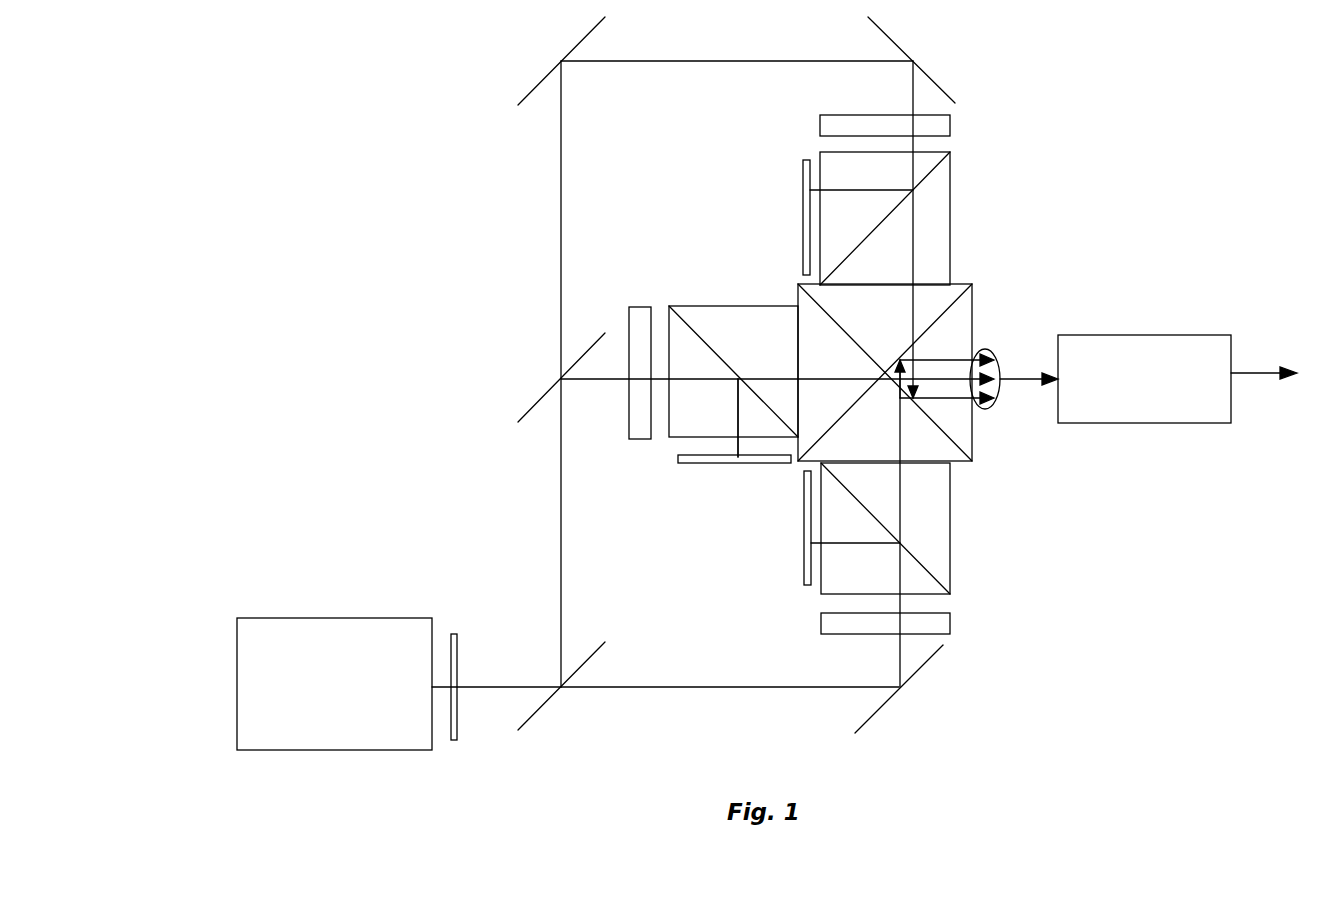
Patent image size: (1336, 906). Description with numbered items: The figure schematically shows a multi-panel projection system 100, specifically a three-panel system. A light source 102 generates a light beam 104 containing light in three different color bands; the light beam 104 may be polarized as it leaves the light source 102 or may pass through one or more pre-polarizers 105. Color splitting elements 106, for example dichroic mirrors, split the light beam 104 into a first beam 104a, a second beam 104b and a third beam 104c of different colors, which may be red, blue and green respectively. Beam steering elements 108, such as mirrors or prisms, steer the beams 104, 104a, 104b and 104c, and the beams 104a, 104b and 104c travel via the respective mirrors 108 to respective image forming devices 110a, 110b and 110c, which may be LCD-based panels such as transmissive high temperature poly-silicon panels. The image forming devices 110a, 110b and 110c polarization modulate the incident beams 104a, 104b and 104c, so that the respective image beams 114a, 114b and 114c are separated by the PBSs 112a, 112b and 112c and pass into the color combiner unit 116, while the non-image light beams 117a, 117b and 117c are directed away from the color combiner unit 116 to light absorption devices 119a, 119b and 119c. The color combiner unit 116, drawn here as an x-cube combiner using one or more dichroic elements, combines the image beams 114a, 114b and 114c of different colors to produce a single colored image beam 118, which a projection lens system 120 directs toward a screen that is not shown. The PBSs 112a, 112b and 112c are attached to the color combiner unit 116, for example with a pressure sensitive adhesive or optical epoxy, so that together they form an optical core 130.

The multi-panel projection system 100 is at (380, 198).
The light source 102 is at (350, 752).
The light beam 104 is at (527, 687).
The first beam 104a is at (741, 61).
The second beam 104b is at (680, 687).
The third beam 104c is at (600, 385).
The pre-polarizer 105 is at (458, 640).
The color splitting element 106 is at (535, 715).
The beam steering element 108 is at (520, 100).
The image forming device 110a is at (870, 114).
The image forming device 110b is at (943, 637).
The image forming device 110c is at (627, 315).
The PBS 112a is at (950, 193).
The PBS 112b is at (950, 558).
The PBS 112c is at (703, 305).
The image beam 114a is at (913, 248).
The image beam 114b is at (900, 500).
The image beam 114c is at (778, 378).
The color combiner unit 116 is at (973, 320).
The non-image light beam 117a is at (842, 188).
The non-image light beam 117b is at (843, 545).
The non-image light beam 117c is at (735, 425).
The colored image beam 118 is at (1019, 382).
The light absorption device 119a is at (803, 178).
The light absorption device 119b is at (804, 562).
The light absorption device 119c is at (763, 462).
The projection lens system 120 is at (1148, 335).
The optical core 130 is at (1000, 466).